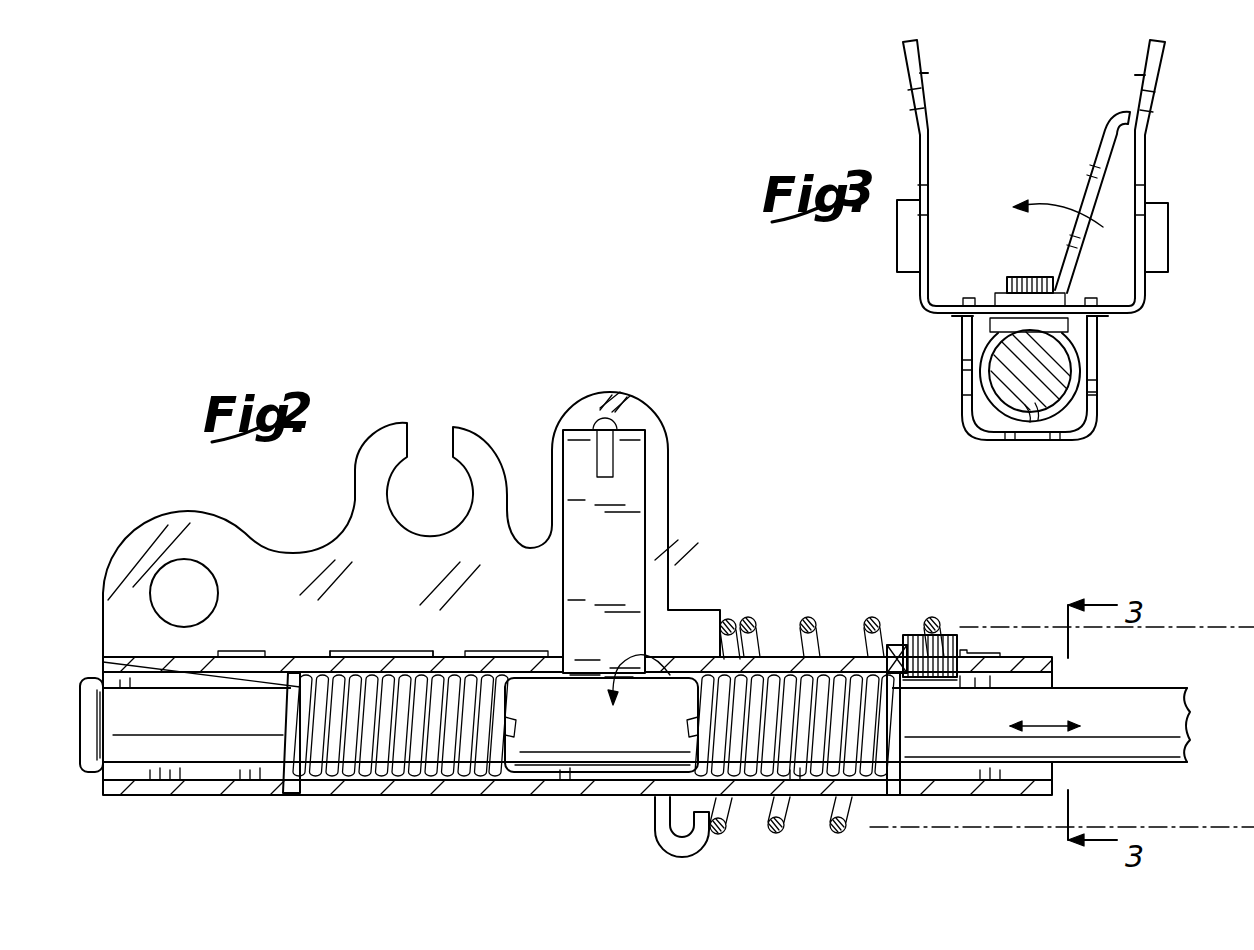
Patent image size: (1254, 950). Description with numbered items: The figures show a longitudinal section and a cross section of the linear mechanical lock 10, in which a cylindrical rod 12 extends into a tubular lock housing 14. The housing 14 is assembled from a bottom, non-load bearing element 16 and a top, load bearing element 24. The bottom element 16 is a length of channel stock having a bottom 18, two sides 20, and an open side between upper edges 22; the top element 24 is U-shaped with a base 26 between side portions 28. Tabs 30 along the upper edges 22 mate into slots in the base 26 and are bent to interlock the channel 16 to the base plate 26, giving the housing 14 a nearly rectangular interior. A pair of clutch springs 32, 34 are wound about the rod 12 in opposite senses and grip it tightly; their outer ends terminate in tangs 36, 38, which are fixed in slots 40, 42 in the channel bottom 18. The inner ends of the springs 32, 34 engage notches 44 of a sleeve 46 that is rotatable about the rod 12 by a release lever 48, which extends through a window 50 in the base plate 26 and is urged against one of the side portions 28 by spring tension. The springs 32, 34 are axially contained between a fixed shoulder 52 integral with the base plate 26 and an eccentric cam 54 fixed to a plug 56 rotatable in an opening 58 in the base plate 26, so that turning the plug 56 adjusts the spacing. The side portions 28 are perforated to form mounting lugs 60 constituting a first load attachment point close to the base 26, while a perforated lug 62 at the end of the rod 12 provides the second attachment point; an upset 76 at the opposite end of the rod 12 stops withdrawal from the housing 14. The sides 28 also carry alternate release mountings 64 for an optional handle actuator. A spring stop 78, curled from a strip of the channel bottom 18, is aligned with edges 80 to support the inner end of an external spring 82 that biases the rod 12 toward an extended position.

In FIG. 2, the linear mechanical lock 10 is at (762, 567).
In FIG. 3, the linear mechanical lock 10 is at (1205, 170).
In FIG. 2, the cylindrical rod 12 is at (1160, 700).
In FIG. 3, the cylindrical rod 12 is at (1030, 371).
In FIG. 3, the tubular lock housing 14 is at (958, 330).
In FIG. 2, the bottom non-load bearing element 16 is at (505, 797).
In FIG. 3, the bottom non-load bearing element 16 is at (1100, 375).
In FIG. 2, the bottom of the channel 18 is at (158, 787).
In FIG. 3, the bottom of the channel 18 is at (1012, 432).
In FIG. 3, the sides of the channel 20 is at (963, 398).
In FIG. 3, the upper edges of the channel 22 is at (958, 318).
In FIG. 3, the top load bearing element 24 is at (1142, 309).
In FIG. 2, the base plate 26 is at (810, 616).
In FIG. 3, the base plate 26 is at (1000, 290).
In FIG. 2, the side portions 28 is at (372, 582).
In FIG. 3, the side portions 28 is at (928, 165).
In FIG. 2, the tabs 30 is at (258, 652).
In FIG. 3, the tabs 30 is at (968, 296).
In FIG. 2, the first clutch spring 32 is at (405, 770).
In FIG. 2, the second clutch spring 34 is at (812, 780).
In FIG. 2, the tang 36 is at (287, 797).
In FIG. 2, the tang 38 is at (905, 797).
In FIG. 2, the slot 40 is at (258, 797).
In FIG. 2, the slot 42 is at (945, 790).
In FIG. 2, the notches 44 is at (516, 727).
In FIG. 2, the sleeve 46 is at (597, 753).
In FIG. 2, the release lever 48 is at (652, 525).
In FIG. 3, the release lever 48 is at (1100, 140).
In FIG. 2, the window 50 is at (523, 656).
In FIG. 2, the fixed shoulder 52 is at (320, 668).
In FIG. 2, the eccentric cam 54 is at (893, 648).
In FIG. 2, the plug 56 is at (940, 622).
In FIG. 2, the opening 58 is at (952, 635).
In FIG. 2, the mounting lugs 60 is at (195, 575).
In FIG. 2, the mounting lug 62 is at (613, 393).
In FIG. 2, the alternate release mountings 64 is at (477, 462).
In FIG. 2, the upset 76 is at (88, 678).
In FIG. 2, the spring stop 78 is at (705, 838).
In FIG. 2, the edges 80 is at (727, 618).
In FIG. 3, the edges 80 is at (918, 293).
In FIG. 2, the external spring 82 is at (846, 830).